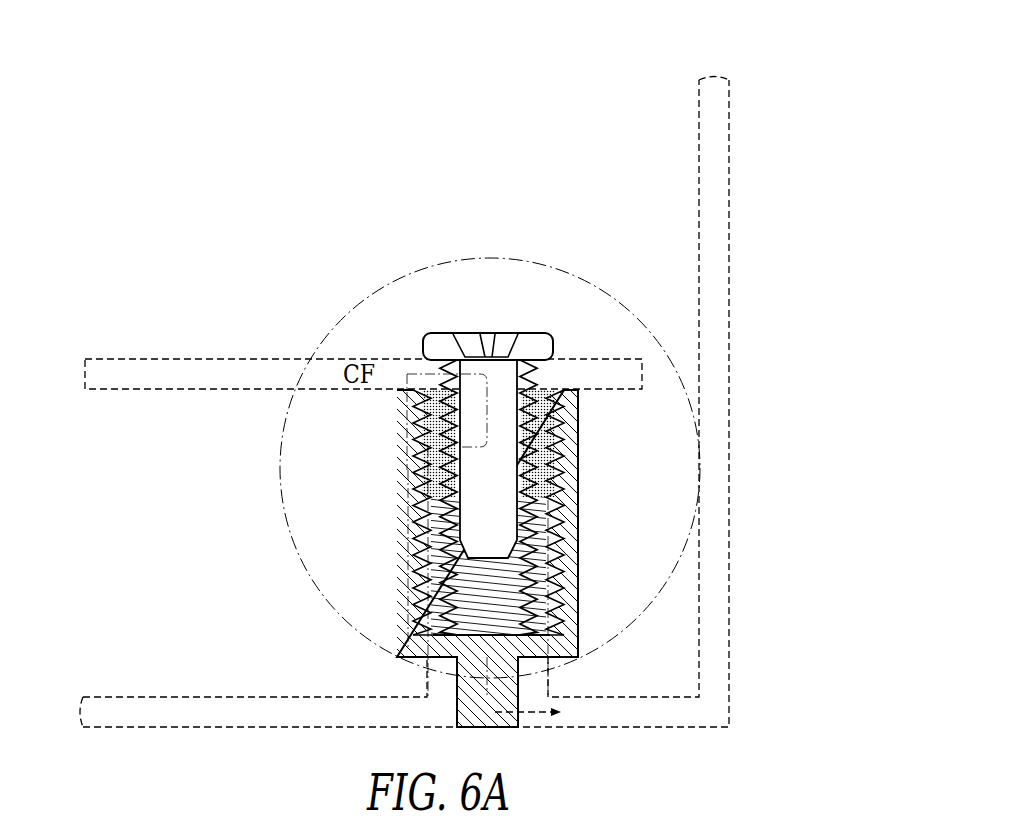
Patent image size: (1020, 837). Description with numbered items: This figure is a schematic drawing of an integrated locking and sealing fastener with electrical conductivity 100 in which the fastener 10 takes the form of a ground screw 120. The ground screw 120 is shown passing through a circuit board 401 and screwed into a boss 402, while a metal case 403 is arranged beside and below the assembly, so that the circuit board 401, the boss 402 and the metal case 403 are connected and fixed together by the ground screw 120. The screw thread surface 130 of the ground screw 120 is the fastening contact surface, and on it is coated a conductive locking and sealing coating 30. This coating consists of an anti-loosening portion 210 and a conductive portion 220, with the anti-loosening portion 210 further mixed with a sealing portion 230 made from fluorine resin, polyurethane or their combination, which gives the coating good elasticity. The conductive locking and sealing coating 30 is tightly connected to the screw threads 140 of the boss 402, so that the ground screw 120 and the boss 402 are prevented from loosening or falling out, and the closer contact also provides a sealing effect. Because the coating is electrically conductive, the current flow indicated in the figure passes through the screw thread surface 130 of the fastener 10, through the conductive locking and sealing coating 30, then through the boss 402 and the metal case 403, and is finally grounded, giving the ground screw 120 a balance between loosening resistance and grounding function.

The integrated locking and sealing fastener with electrical conductivity 100 is at (72, 46).
The fastener 10 is at (506, 429).
The ground screw 120 is at (531, 330).
The conductive locking and sealing coating 30 is at (352, 443).
The anti-loosening portion 210 is at (352, 409).
The conductive portion 220 is at (352, 444).
The sealing portion 230 is at (352, 475).
The screw thread surface 130 is at (407, 438).
The screw threads 140 is at (407, 488).
The circuit board 401 is at (137, 358).
The boss 402 is at (438, 558).
The metal case 403 is at (730, 595).